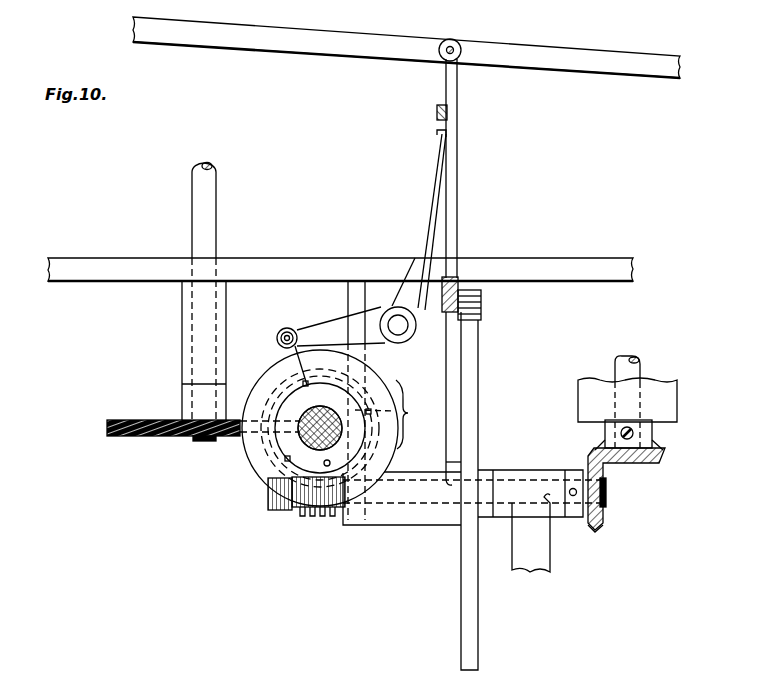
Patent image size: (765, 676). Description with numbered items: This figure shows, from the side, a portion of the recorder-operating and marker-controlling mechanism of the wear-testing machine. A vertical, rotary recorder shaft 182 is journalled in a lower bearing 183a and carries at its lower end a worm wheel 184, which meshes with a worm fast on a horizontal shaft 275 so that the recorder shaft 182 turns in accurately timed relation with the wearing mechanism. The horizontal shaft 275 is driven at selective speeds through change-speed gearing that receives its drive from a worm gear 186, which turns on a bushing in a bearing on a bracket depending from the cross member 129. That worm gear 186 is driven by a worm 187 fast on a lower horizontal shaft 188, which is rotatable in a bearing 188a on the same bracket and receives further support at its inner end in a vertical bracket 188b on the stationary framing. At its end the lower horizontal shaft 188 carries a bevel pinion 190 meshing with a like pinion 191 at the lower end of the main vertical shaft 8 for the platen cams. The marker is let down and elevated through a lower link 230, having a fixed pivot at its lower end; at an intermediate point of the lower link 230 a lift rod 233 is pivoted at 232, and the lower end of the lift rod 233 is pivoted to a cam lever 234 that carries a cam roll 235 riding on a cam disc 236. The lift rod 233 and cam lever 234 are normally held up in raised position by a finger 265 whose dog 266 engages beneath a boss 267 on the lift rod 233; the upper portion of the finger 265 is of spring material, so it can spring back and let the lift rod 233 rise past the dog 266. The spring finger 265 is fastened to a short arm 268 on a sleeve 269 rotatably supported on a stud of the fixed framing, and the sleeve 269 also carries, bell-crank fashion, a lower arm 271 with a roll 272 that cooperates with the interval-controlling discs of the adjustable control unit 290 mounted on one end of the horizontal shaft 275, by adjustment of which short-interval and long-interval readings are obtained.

The main vertical shaft 8 is at (632, 372).
The cross member 129 is at (268, 264).
The recorder shaft 182 is at (200, 210).
The lower bearing 183a is at (183, 322).
The worm wheel 184 is at (126, 437).
The worm gear 186 is at (264, 482).
The worm 187 is at (312, 516).
The lower horizontal shaft 188 is at (606, 490).
The bearing 188a is at (412, 516).
The vertical bracket 188b is at (548, 548).
The bevel pinion 190 is at (596, 520).
The bevel pinion 191 is at (660, 456).
The lower link 230 is at (362, 52).
The pivot 232 is at (456, 44).
The lift rod 233 is at (458, 180).
The cam lever 234 is at (459, 282).
The cam roll 235 is at (482, 297).
The cam disc 236 is at (476, 407).
The finger 265 is at (437, 180).
The dog 266 is at (437, 133).
The boss 267 is at (437, 108).
The short arm 268 is at (416, 275).
The sleeve 269 is at (402, 341).
The lower arm 271 is at (334, 330).
The roll 272 is at (280, 331).
The horizontal shaft 275 is at (300, 438).
The adjustable control unit 290 is at (419, 414).